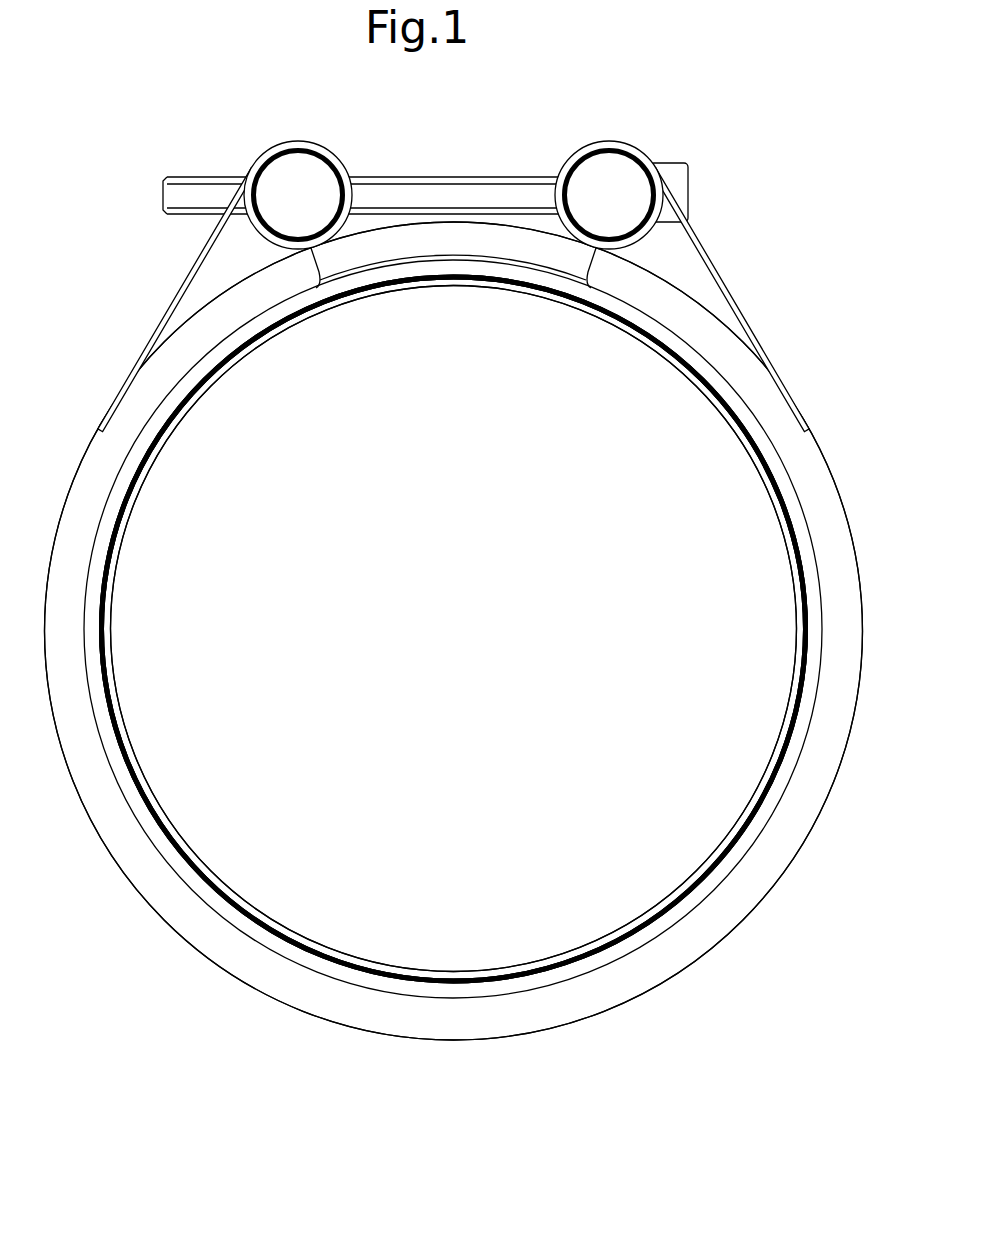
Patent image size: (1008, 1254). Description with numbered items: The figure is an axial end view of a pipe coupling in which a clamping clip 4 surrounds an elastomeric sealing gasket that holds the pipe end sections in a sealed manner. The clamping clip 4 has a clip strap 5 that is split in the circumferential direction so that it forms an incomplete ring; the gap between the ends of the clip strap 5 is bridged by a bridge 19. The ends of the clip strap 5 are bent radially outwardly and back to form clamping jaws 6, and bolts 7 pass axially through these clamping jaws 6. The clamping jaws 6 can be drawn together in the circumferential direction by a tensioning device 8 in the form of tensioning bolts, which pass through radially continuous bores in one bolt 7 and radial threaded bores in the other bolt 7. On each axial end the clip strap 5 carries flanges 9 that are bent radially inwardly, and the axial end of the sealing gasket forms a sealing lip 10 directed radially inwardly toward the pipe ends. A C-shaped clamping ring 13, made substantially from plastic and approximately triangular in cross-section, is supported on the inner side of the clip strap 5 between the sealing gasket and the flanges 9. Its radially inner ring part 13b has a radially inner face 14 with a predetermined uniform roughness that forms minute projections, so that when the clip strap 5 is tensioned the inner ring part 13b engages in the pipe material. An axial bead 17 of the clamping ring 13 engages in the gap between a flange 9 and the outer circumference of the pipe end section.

The clamping clip 4 is at (850, 532).
The clip strap 5 is at (860, 594).
The clamping jaws 6 is at (269, 144).
The bolts 7 is at (303, 168).
The tensioning device 8 is at (484, 177).
The flanges 9 is at (817, 472).
The sealing lip 10 is at (730, 422).
The clamping ring 13 is at (820, 663).
The inner ring part 13b is at (790, 518).
The radially inner face 14 is at (770, 482).
The axial bead 17 is at (803, 715).
The bridge 19 is at (517, 252).